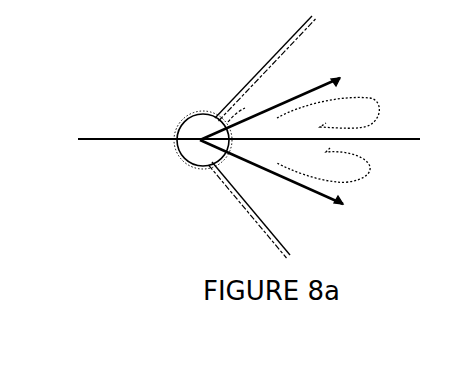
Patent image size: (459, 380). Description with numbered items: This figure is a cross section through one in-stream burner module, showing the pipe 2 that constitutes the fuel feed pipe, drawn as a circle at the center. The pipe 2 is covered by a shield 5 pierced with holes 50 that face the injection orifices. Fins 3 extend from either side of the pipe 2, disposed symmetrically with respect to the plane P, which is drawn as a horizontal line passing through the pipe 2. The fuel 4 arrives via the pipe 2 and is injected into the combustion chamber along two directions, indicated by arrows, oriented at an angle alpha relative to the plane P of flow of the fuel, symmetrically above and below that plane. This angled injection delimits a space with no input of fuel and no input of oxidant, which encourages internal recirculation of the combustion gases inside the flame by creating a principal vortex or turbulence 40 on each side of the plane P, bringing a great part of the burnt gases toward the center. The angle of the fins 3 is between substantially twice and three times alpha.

The pipe 2 is at (183, 150).
The fins 3 is at (280, 37).
The fuel 4 is at (320, 82).
The shield 5 is at (201, 113).
The principal vortex 40 is at (378, 100).
The holes 50 is at (238, 119).
The plane P is at (403, 137).